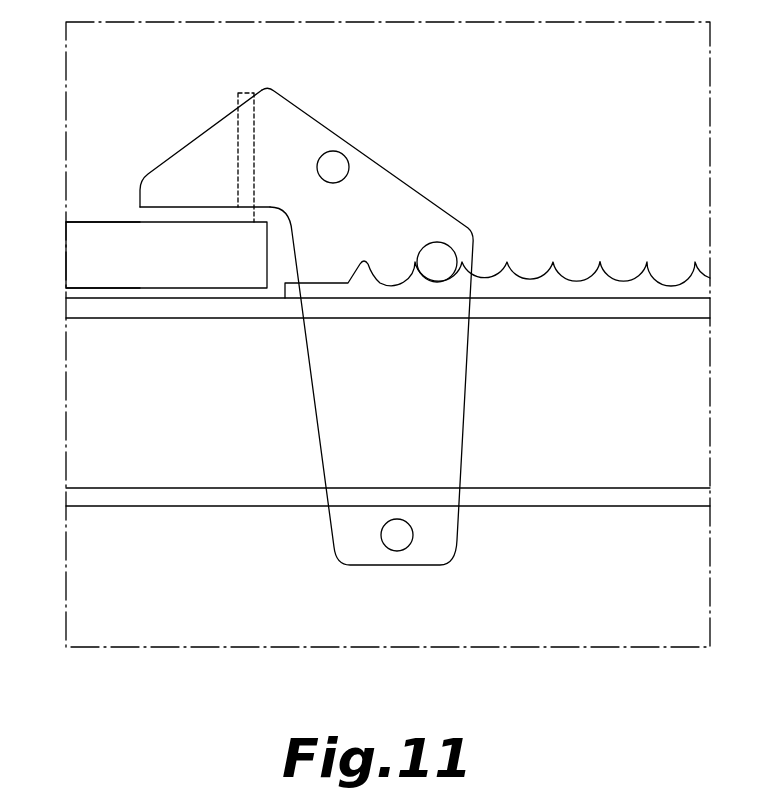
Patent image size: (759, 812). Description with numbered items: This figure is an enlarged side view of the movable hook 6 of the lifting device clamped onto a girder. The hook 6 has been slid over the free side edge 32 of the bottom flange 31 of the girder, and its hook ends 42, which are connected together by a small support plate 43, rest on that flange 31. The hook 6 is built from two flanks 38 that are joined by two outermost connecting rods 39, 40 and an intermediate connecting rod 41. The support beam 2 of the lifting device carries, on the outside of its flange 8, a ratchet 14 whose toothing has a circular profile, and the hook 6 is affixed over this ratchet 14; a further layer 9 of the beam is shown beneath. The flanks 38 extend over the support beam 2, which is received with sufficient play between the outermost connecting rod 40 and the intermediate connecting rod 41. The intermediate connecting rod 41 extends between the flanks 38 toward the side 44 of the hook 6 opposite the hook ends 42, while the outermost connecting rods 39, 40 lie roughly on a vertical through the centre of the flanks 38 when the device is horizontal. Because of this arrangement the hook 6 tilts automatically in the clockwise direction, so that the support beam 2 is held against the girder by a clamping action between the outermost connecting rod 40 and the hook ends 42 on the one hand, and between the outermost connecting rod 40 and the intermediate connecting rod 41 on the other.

The support beam 2 is at (652, 404).
The movable hook 6 is at (274, 299).
The flange 8 is at (571, 318).
The lower layer 9 is at (600, 495).
The ratchet 14 is at (618, 292).
The flange 31 is at (82, 248).
The free side edge 32 is at (248, 274).
The flank 38 is at (393, 215).
The outermost connecting rod 39 is at (337, 160).
The outermost connecting rod 40 is at (397, 535).
The intermediate connecting rod 41 is at (440, 262).
The hook end 42 is at (148, 156).
The support plate 43 is at (152, 216).
The side 44 is at (522, 190).